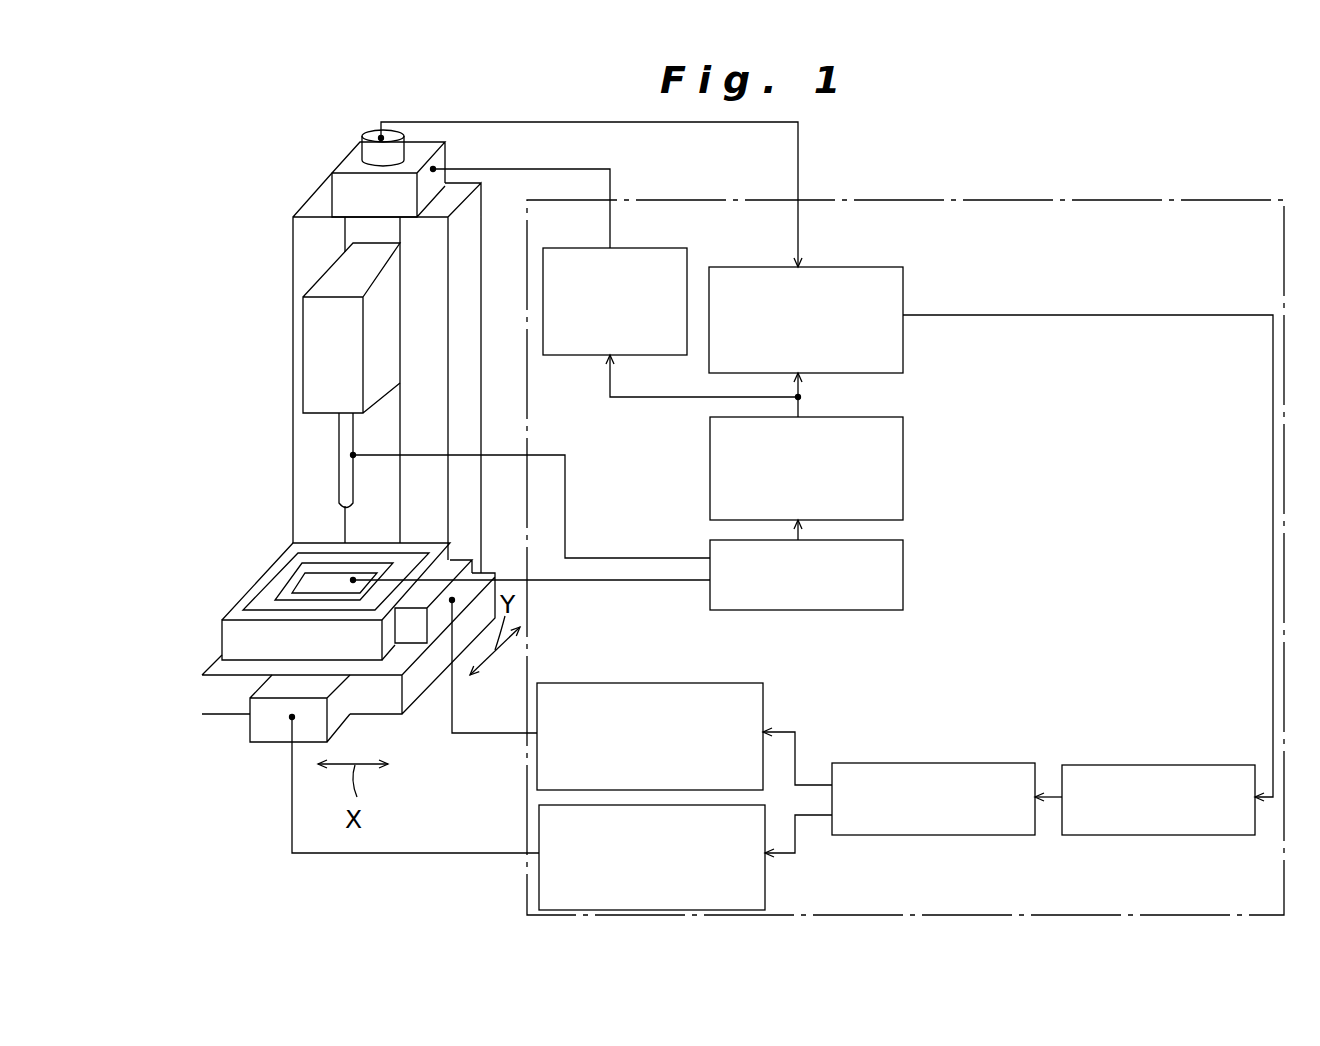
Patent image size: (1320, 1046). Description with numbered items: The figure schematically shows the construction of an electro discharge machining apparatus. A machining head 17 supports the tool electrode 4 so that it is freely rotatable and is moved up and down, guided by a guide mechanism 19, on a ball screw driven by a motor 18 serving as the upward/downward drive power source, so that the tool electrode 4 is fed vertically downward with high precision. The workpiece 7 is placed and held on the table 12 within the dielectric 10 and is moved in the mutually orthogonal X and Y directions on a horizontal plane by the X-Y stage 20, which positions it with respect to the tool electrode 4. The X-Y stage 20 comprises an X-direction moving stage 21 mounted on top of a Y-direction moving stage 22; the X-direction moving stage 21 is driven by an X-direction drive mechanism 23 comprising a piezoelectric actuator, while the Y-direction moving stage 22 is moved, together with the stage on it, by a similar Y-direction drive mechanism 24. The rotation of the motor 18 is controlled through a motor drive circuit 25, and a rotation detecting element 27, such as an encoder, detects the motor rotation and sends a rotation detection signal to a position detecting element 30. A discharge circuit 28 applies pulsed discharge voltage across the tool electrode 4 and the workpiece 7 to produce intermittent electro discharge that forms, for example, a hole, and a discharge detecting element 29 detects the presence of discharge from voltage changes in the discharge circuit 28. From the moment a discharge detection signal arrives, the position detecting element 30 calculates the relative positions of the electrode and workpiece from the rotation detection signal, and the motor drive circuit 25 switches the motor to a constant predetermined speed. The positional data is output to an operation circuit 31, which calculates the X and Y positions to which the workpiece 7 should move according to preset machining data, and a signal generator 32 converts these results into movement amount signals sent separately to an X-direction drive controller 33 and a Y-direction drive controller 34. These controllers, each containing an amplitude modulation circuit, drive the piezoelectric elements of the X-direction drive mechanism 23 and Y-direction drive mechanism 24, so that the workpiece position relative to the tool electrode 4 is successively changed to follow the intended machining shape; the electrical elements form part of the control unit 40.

The tool electrode 4 is at (345, 485).
The workpiece 7 is at (307, 582).
The dielectric 10 is at (267, 597).
The table 12 is at (368, 565).
The machining head 17 is at (323, 350).
The motor 18 is at (345, 195).
The guide mechanism 19 is at (313, 447).
The X-Y stage 20 is at (326, 716).
The X-direction moving stage 21 is at (245, 640).
The Y-direction moving stage 22 is at (245, 688).
The X-direction drive mechanism 23 is at (415, 628).
The Y-direction drive mechanism 24 is at (337, 720).
The motor drive circuit 25 is at (652, 248).
The rotation detecting element 27 is at (372, 142).
The discharge circuit 28 is at (903, 583).
The discharge detecting element 29 is at (903, 455).
The position detecting element 30 is at (903, 292).
The operation circuit 31 is at (1165, 765).
The signal generator 32 is at (965, 763).
The X-direction drive controller 33 is at (690, 683).
The Y-direction drive controller 34 is at (765, 877).
The control unit 40 is at (1176, 197).